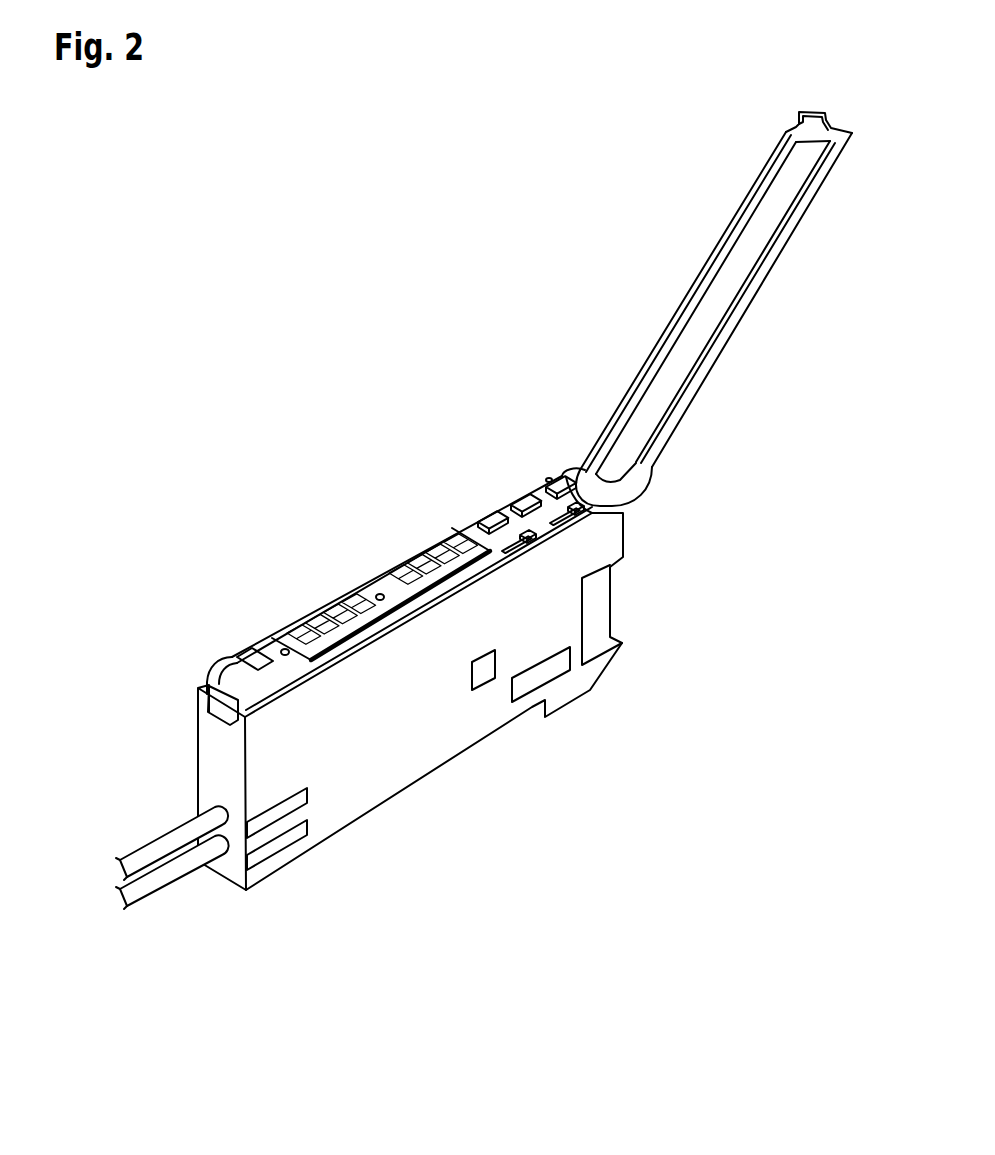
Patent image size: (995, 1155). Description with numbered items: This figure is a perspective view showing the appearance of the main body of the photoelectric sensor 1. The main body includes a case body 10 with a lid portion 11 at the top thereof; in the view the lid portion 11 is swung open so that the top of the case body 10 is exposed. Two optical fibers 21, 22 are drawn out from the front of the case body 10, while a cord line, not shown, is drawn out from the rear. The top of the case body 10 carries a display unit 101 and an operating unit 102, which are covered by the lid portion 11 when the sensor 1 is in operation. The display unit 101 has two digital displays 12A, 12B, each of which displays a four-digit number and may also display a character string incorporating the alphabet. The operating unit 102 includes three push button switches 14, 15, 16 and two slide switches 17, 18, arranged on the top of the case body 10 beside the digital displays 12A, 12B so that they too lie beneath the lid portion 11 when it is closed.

The photoelectric sensor 1 is at (542, 327).
The case body 10 is at (462, 738).
The lid portion 11 is at (712, 321).
The digital display 12A is at (303, 620).
The digital display 12B is at (430, 537).
The display unit 101 is at (369, 586).
The operating unit 102 is at (546, 476).
The push button switch 14 is at (515, 497).
The push button switch 15 is at (483, 512).
The push button switch 16 is at (556, 470).
The slide switch 17 is at (529, 540).
The slide switch 18 is at (588, 511).
The optical fiber 21 is at (158, 847).
The optical fiber 22 is at (163, 878).